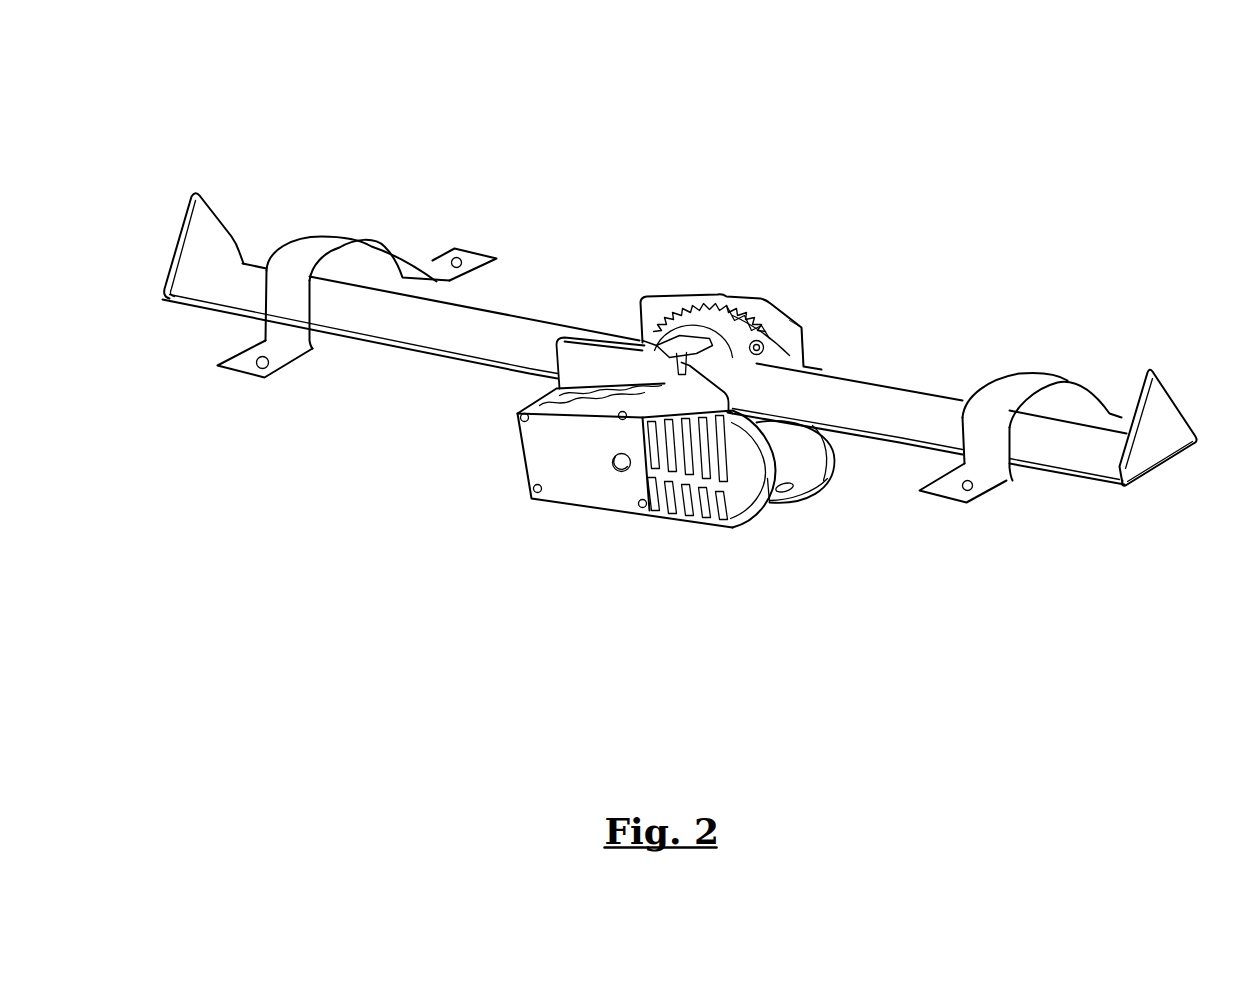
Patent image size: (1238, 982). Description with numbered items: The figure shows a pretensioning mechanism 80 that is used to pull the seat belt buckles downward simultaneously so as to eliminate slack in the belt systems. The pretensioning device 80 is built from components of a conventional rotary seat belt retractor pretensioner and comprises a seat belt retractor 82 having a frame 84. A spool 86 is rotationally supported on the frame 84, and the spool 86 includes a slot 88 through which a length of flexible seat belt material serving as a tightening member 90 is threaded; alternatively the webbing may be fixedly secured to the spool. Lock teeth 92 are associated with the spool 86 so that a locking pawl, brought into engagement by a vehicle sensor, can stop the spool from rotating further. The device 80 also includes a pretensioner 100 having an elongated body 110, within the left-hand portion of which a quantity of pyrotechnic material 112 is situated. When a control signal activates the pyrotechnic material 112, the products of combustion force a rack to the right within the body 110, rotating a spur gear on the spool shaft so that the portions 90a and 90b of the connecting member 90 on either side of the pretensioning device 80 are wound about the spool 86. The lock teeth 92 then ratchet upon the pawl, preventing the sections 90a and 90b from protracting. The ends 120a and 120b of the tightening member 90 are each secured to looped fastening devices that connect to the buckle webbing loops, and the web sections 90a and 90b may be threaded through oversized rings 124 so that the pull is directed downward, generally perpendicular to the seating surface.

The pretensioning mechanism 80 is at (618, 281).
The seat belt retractor 82 is at (645, 297).
The frame 84 is at (782, 347).
The spool 86 is at (680, 342).
The slot 88 is at (798, 333).
The tightening member 90 is at (517, 313).
The portion of tightening member 90a is at (535, 328).
The portion of tightening member 90b is at (923, 407).
The lock teeth 92 is at (735, 328).
The pretensioner 100 is at (568, 457).
The elongated body 110 is at (602, 482).
The pyrotechnic material 112 is at (790, 442).
The end of tightening member 120a is at (208, 232).
The end of tightening member 120b is at (1155, 412).
The oversized ring 124 is at (332, 245).